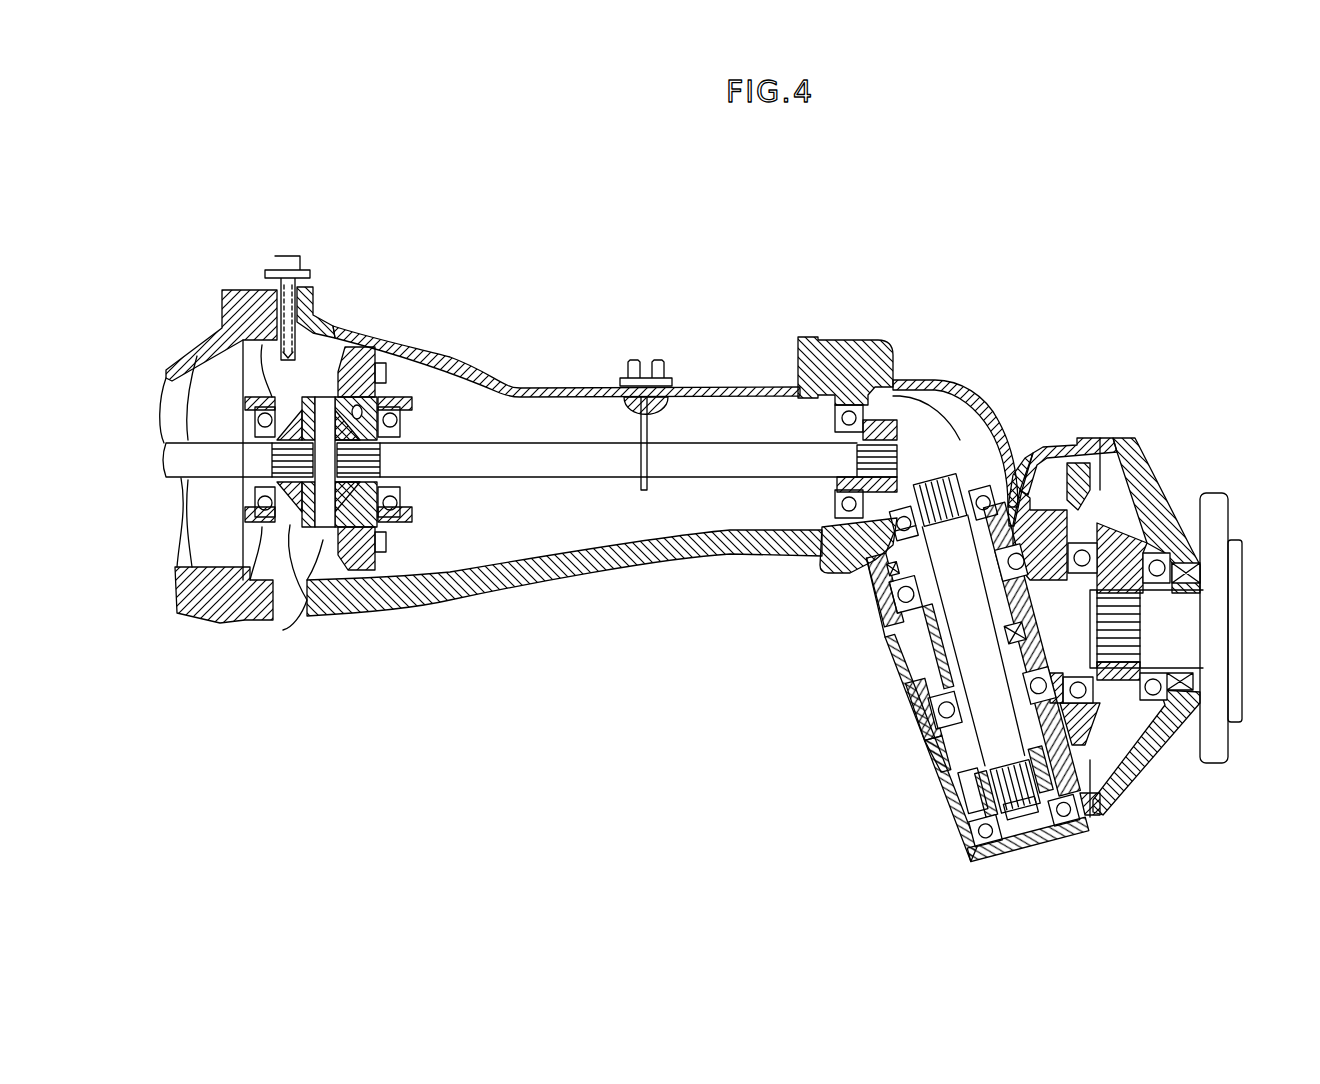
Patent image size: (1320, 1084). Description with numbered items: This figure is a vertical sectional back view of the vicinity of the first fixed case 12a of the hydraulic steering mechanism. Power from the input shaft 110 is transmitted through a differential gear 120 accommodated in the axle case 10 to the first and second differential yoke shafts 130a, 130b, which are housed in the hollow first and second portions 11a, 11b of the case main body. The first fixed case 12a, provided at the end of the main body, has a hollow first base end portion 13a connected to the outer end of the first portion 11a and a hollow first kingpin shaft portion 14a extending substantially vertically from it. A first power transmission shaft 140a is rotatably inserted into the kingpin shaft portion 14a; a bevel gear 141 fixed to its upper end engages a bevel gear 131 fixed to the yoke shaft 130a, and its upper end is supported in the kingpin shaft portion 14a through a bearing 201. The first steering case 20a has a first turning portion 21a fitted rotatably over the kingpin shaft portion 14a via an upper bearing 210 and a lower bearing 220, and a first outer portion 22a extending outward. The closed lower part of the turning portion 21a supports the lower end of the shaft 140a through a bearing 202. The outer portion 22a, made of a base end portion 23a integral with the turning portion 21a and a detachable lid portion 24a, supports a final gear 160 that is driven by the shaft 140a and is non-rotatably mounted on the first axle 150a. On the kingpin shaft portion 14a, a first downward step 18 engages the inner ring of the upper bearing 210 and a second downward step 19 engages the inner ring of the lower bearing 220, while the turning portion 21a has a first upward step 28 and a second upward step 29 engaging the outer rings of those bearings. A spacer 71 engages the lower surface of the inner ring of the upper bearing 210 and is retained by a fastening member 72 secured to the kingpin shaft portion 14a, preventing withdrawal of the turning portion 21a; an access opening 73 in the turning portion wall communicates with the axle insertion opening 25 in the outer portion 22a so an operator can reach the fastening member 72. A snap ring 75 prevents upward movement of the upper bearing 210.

The axle case 10 is at (602, 435).
The first portion 11a is at (558, 385).
The second portion 11b is at (176, 365).
The differential gear 120 is at (320, 364).
The input shaft 110 is at (283, 592).
The first differential yoke shaft 130a is at (582, 471).
The second differential yoke shaft 130b is at (186, 472).
The bevel gear 131 is at (897, 437).
The bevel gear 141 is at (958, 478).
The bearing 201 is at (1012, 482).
The first outer portion 22a is at (1106, 567).
The base end portion 23a is at (1064, 432).
The lid portion 24a is at (1145, 460).
The snap ring 75 is at (1056, 500).
The final gear 160 is at (1112, 522).
The first axle 150a is at (1187, 615).
The first downward step 18 is at (937, 605).
The second downward step 19 is at (978, 738).
The first fixed case 12a is at (814, 652).
The first base end portion 13a is at (828, 583).
The first kingpin shaft portion 14a is at (933, 670).
The upper bearing 210 is at (885, 598).
The lower bearing 220 is at (912, 712).
The first upward step 28 is at (887, 625).
The second upward step 29 is at (930, 742).
The first steering case 20a is at (885, 738).
The first turning portion 21a is at (936, 760).
The spacer 71 is at (1015, 607).
The fastening member 72 is at (1036, 643).
The access opening 73 is at (1073, 620).
The axle insertion opening 25 is at (1182, 667).
The first power transmission shaft 140a is at (1003, 745).
The bearing 202 is at (963, 858).